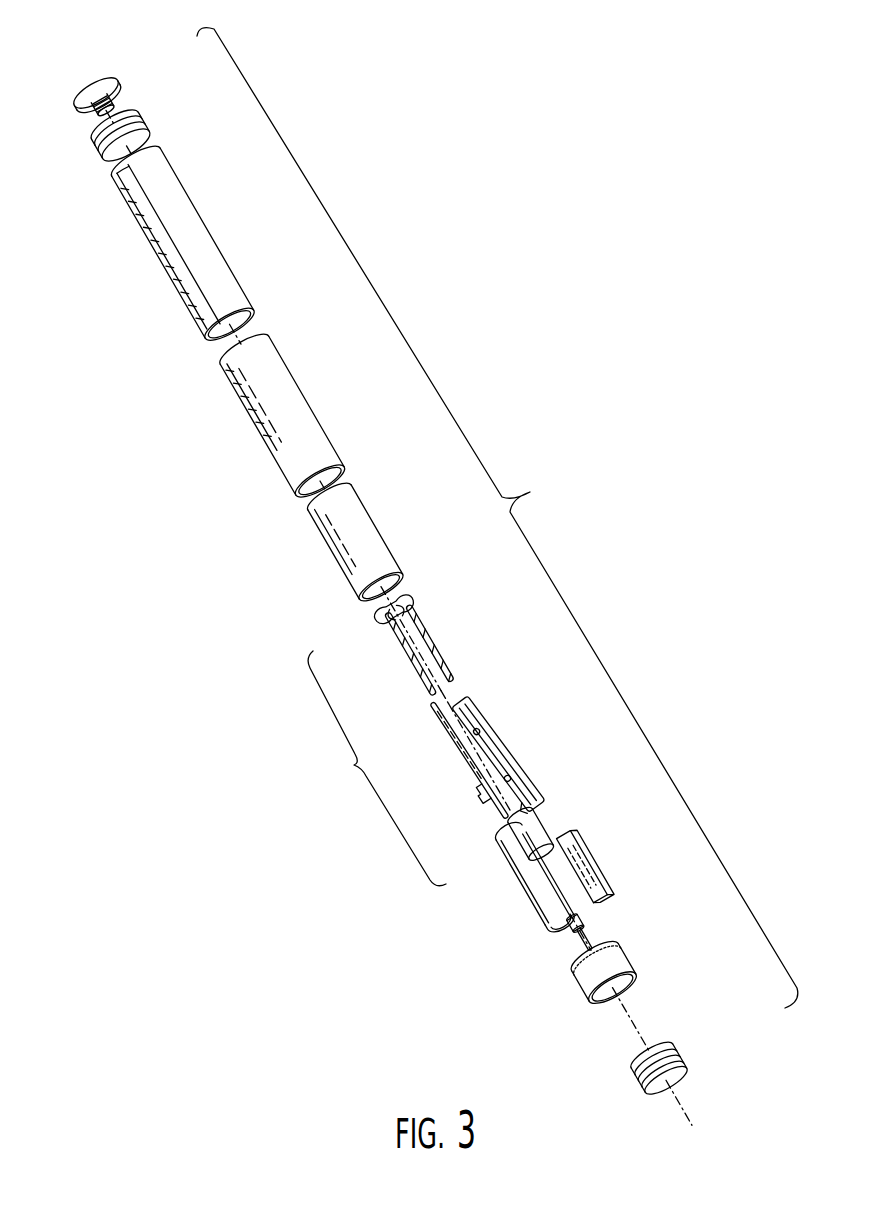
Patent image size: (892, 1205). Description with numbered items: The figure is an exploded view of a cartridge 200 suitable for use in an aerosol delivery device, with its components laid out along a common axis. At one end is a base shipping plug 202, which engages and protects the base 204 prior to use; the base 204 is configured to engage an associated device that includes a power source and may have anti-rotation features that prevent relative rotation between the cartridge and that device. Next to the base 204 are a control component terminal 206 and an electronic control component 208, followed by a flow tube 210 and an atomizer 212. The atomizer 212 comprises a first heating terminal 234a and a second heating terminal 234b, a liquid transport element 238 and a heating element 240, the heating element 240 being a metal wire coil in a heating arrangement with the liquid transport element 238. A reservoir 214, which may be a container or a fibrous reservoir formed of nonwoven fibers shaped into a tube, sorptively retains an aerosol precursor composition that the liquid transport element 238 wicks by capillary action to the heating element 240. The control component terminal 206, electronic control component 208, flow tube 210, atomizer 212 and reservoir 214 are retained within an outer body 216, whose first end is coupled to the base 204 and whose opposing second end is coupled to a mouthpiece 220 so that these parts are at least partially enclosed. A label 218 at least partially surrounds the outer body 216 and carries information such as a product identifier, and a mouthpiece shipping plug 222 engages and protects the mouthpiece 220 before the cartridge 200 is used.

The cartridge 200 is at (497, 518).
The base shipping plug 202 is at (688, 1058).
The base 204 is at (588, 993).
The control component terminal 206 is at (590, 927).
The electronic control component 208 is at (600, 857).
The flow tube 210 is at (501, 853).
The atomizer 212 is at (377, 768).
The reservoir 214 is at (387, 543).
The outer body 216 is at (254, 420).
The label 218 is at (226, 264).
The mouthpiece 220 is at (147, 117).
The mouthpiece shipping plug 222 is at (114, 88).
The first heating terminal 234a is at (513, 751).
The second heating terminal 234b is at (473, 767).
The liquid transport element 238 is at (424, 690).
The heating element 240 is at (404, 650).